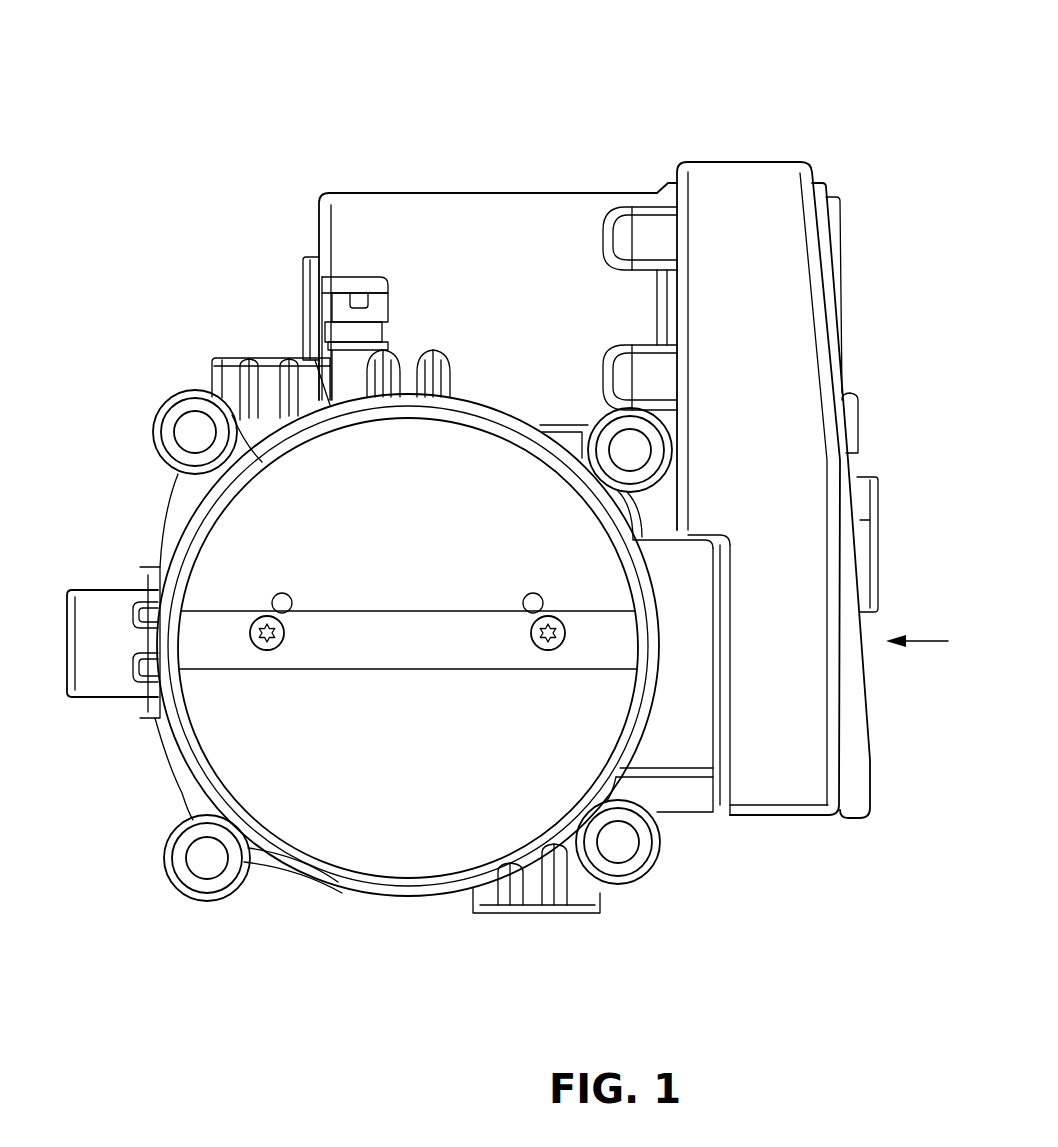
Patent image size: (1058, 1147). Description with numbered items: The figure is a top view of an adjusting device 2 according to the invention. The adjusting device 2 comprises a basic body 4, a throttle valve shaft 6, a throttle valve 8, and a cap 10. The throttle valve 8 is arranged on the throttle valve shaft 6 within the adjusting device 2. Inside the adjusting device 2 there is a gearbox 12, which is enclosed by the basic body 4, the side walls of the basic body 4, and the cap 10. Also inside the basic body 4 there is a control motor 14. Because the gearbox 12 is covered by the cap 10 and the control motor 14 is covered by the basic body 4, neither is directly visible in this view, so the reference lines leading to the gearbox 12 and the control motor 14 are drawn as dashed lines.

The adjusting device 2 is at (592, 130).
The basic body 4 is at (693, 757).
The throttle valve shaft 6 is at (412, 630).
The throttle valve 8 is at (413, 848).
The cap 10 is at (852, 798).
The gearbox 12 is at (773, 770).
The control motor 14 is at (405, 215).